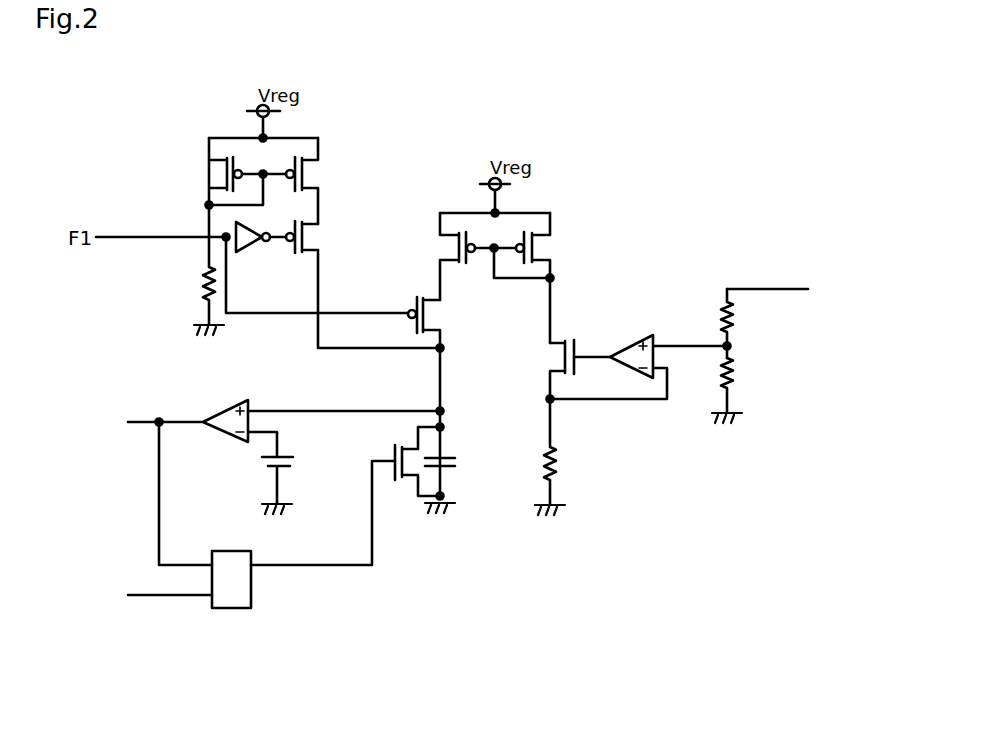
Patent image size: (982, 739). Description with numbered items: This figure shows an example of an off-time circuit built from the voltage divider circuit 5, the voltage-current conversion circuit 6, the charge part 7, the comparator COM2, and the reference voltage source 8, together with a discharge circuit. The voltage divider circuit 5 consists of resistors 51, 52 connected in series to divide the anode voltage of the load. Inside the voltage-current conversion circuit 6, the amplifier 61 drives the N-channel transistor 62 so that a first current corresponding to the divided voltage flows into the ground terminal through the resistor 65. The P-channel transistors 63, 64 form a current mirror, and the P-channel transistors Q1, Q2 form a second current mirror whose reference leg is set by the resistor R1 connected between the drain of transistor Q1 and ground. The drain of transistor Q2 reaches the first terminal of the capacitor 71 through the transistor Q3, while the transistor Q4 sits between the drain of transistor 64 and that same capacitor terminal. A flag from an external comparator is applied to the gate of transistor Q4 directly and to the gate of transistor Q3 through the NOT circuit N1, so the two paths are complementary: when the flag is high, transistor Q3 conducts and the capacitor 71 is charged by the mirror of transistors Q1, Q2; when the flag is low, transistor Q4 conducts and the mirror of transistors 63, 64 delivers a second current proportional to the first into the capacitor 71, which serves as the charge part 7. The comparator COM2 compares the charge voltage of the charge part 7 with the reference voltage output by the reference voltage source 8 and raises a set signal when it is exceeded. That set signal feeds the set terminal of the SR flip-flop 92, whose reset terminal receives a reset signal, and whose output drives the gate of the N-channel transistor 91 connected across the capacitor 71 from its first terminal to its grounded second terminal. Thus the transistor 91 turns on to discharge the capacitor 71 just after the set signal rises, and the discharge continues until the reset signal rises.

The P-channel MOS field-effect transistor Q1 is at (204, 176).
The P-channel MOS field-effect transistor Q2 is at (322, 177).
The P-channel MOS field-effect transistor Q3 is at (322, 240).
The P-channel MOS field-effect transistor Q4 is at (447, 317).
The NOT circuit N1 is at (248, 254).
The resistor R1 is at (197, 284).
The P-channel MOS field-effect transistor 64 is at (439, 250).
The P-channel MOS field-effect transistor 63 is at (554, 250).
The N-channel MOS field-effect transistor 62 is at (579, 343).
The amplifier 61 is at (632, 343).
The resistor 65 is at (561, 464).
The voltage-current conversion circuit 6 is at (651, 273).
The voltage divider circuit 5 is at (770, 273).
The resistor 51 is at (741, 319).
The resistor 52 is at (741, 376).
The charge part 7 is at (497, 436).
The capacitor 71 is at (459, 460).
The N-channel MOS field-effect transistor 91 is at (399, 479).
The SR flip-flop 92 is at (230, 549).
The reference voltage source 8 is at (298, 465).
The comparator COM2 is at (222, 404).